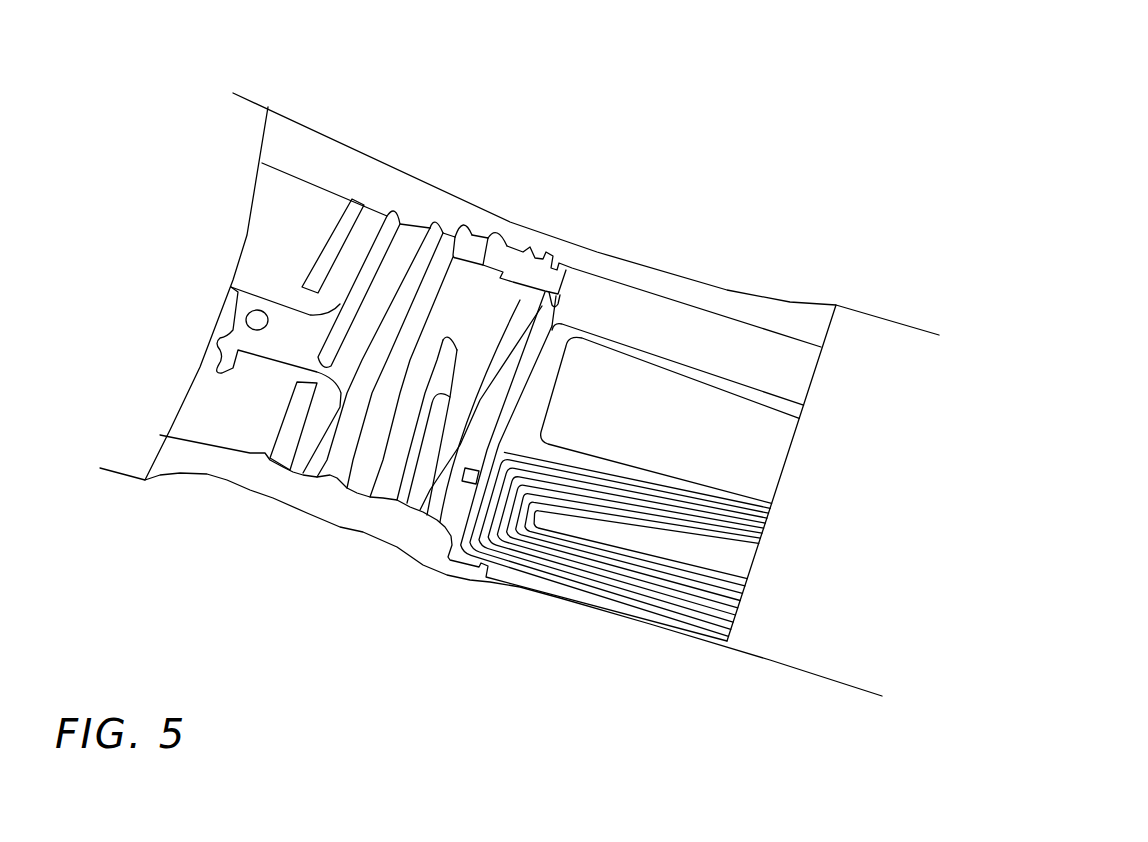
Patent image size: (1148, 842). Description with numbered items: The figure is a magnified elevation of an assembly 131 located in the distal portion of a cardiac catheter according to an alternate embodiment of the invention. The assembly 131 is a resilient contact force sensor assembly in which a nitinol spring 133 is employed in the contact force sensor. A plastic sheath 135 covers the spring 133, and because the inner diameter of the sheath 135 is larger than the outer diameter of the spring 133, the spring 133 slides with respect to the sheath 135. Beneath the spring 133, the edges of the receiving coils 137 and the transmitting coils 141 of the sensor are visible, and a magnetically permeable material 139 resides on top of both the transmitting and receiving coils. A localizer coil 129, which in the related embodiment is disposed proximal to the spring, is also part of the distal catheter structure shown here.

The localizer coil 129 is at (567, 548).
The assembly 131 is at (170, 530).
The nitinol spring 133 is at (333, 475).
The plastic sheath 135 is at (587, 243).
The receiving coils 137 is at (397, 223).
The magnetically permeable material 139 is at (358, 207).
The transmitting coils 141 is at (480, 238).